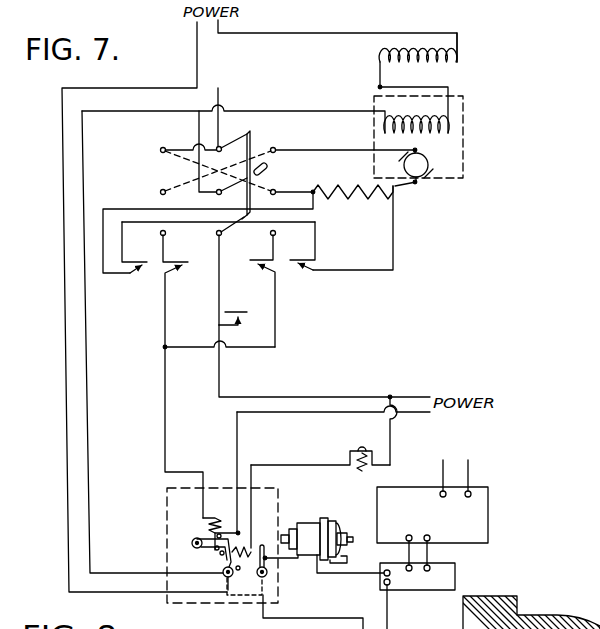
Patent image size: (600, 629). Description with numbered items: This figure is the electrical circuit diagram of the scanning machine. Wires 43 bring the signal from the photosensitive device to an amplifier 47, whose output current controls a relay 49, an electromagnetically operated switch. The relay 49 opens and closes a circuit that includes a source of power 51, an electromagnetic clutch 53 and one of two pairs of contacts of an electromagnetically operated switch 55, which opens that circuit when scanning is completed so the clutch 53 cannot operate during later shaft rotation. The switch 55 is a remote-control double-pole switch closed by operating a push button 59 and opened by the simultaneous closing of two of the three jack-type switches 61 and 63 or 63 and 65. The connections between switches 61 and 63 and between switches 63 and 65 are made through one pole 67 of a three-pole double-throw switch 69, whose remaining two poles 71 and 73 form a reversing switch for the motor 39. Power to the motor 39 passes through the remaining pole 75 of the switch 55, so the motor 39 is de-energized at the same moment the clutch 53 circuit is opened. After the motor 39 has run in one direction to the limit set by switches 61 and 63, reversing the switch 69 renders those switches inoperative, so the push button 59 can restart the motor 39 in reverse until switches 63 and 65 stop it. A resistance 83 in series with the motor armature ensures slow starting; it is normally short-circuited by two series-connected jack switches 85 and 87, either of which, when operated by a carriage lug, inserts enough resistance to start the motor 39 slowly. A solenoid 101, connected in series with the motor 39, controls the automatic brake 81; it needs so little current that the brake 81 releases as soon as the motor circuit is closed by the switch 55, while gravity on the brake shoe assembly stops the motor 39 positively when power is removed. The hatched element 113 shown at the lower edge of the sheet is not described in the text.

The solenoid 101 is at (408, 44).
The automatic brake 81 is at (459, 63).
The motor 39 is at (457, 133).
The pole of three-pole switch 73 is at (221, 146).
The three-pole double-throw switch 69 is at (257, 143).
The pole of three-pole switch 71 is at (214, 195).
The resistance 83 is at (343, 196).
The pole of three-pole switch 67 is at (222, 235).
The jack switch 85 is at (132, 271).
The switch 61 is at (172, 274).
The switch 63 is at (237, 311).
The switch 65 is at (263, 266).
The jack switch 87 is at (312, 267).
The push button 59 is at (361, 447).
The wires 43 is at (443, 470).
The electromagnetic clutch 53 is at (310, 533).
The amplifier 47 is at (480, 534).
The pole of electromagnetic switch 75 is at (227, 563).
The relay 49 is at (450, 569).
The electromagnetically operated switch 55 is at (170, 600).
The source of power 51 is at (378, 621).
The cam 113 is at (546, 628).